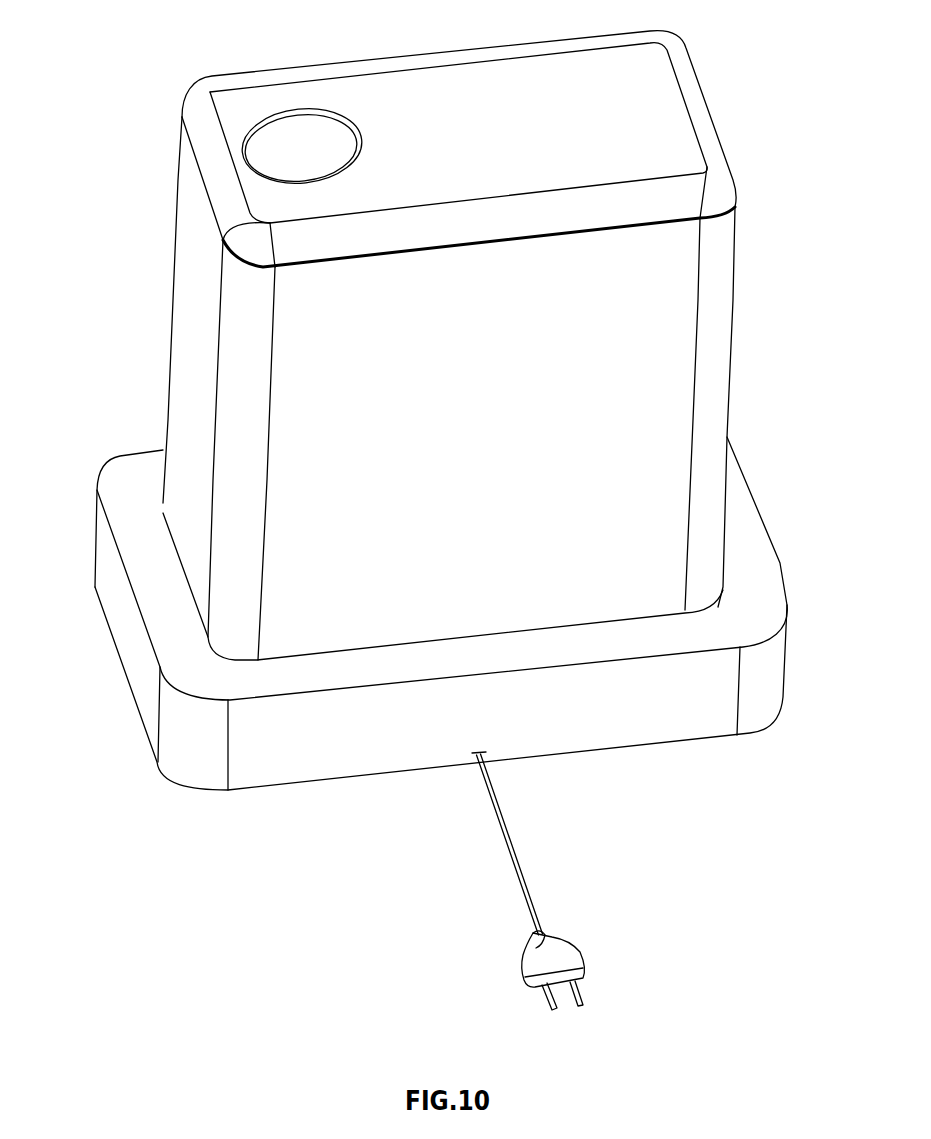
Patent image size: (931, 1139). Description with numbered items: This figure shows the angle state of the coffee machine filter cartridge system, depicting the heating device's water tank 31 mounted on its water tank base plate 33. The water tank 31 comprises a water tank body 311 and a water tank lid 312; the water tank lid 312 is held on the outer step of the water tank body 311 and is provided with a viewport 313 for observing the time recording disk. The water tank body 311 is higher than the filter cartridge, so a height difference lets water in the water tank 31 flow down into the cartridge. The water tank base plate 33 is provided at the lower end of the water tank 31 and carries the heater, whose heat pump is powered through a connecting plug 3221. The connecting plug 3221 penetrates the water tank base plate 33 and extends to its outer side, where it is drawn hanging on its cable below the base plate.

The water tank 31 is at (101, 4).
The water tank body 311 is at (199, 272).
The water tank lid 312 is at (238, 95).
The viewport 313 is at (316, 138).
The water tank base plate 33 is at (265, 750).
The connecting plug 3221 is at (550, 949).